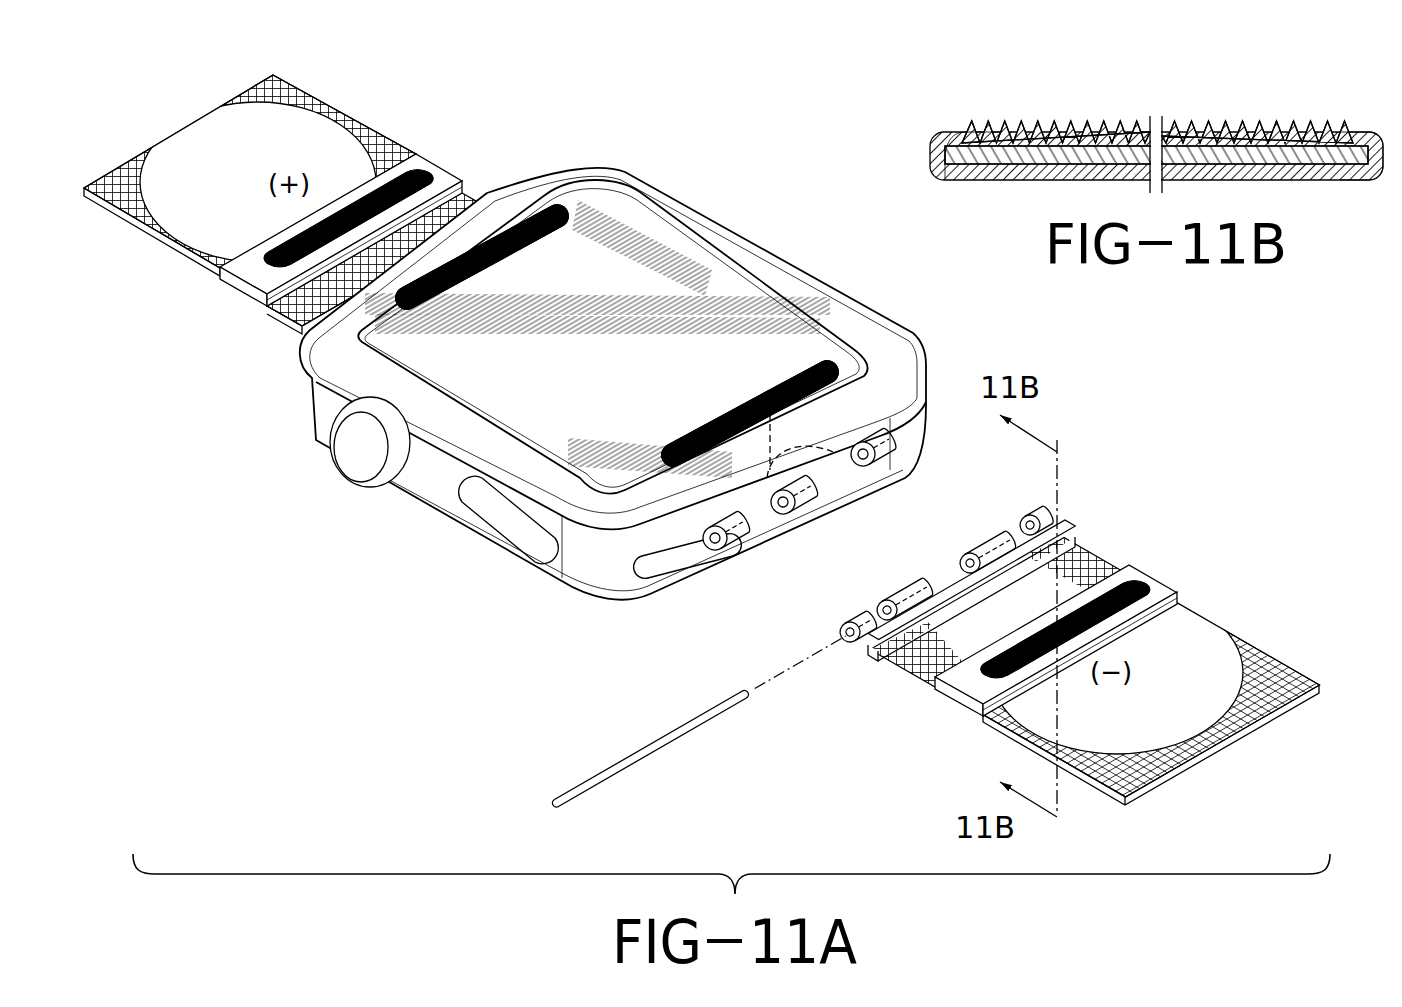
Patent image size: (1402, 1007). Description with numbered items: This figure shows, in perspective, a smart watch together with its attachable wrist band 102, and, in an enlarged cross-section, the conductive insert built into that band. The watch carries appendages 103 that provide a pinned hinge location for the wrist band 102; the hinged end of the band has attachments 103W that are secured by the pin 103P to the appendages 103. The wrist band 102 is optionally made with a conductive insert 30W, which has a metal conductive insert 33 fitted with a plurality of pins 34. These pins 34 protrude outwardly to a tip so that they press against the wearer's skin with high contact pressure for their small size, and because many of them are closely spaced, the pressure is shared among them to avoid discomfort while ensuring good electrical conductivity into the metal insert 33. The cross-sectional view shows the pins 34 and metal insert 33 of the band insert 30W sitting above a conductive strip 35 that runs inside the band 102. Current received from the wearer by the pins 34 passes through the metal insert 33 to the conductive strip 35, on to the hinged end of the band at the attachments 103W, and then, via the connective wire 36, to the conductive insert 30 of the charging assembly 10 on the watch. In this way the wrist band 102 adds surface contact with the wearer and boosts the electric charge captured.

In FIG. 11A, the charging assembly 10 is at (703, 292).
In FIG. 11A, the conductive insert 30 is at (552, 214).
In FIG. 11A, the conductive insert of the wrist band 30W is at (427, 176).
In FIG. 11B, the conductive insert of the wrist band 30W is at (1022, 108).
In FIG. 11A, the metal conductive insert 33 is at (268, 267).
In FIG. 11B, the metal conductive insert 33 is at (968, 132).
In FIG. 11A, the pins 34 is at (370, 187).
In FIG. 11B, the pins 34 is at (1092, 120).
In FIG. 11B, the conductive strip 35 is at (995, 158).
In FIG. 11A, the connective wire 36 is at (852, 470).
In FIG. 11A, the wrist band 102 is at (164, 248).
In FIG. 11B, the wrist band 102 is at (1355, 148).
In FIG. 11A, the appendages 103 is at (808, 504).
In FIG. 11A, the pin 103P is at (650, 747).
In FIG. 11A, the attachments 103W is at (980, 548).